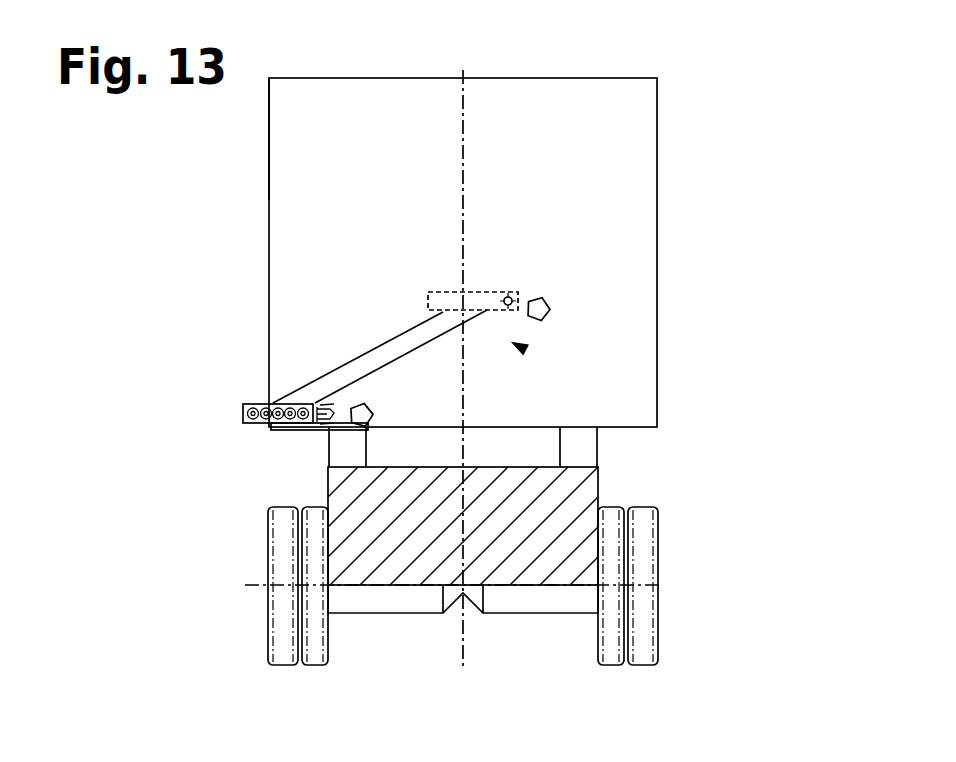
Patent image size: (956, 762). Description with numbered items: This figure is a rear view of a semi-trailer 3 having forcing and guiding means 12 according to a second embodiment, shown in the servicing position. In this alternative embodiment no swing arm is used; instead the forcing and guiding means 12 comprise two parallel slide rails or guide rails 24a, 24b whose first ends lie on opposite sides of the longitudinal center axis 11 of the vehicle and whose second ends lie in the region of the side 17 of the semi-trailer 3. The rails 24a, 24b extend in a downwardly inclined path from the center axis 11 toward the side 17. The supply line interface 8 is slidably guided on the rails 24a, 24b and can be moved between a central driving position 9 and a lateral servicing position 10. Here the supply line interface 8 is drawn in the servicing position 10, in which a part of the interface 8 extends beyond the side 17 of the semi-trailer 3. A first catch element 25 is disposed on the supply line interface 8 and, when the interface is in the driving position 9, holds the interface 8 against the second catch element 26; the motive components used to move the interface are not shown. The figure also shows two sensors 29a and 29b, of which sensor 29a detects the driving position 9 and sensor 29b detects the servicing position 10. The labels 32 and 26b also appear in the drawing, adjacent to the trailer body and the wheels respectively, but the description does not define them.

The semi-trailer 3 is at (463, 252).
The vehicle body 32 is at (463, 252).
The side 17 is at (268, 136).
The longitudinal center axis 11 is at (463, 97).
The supply line interface 8 is at (334, 335).
The driving position 9 is at (430, 292).
The servicing position 10 is at (253, 423).
The slide rail 24a is at (385, 344).
The slide rail 24b is at (378, 370).
The first catch element 25 is at (330, 428).
The second catch element 26 is at (513, 299).
The wheel 26b is at (233, 586).
The sensor 29a is at (550, 308).
The sensor 29b is at (373, 417).
The forcing and guiding means 12 is at (525, 349).